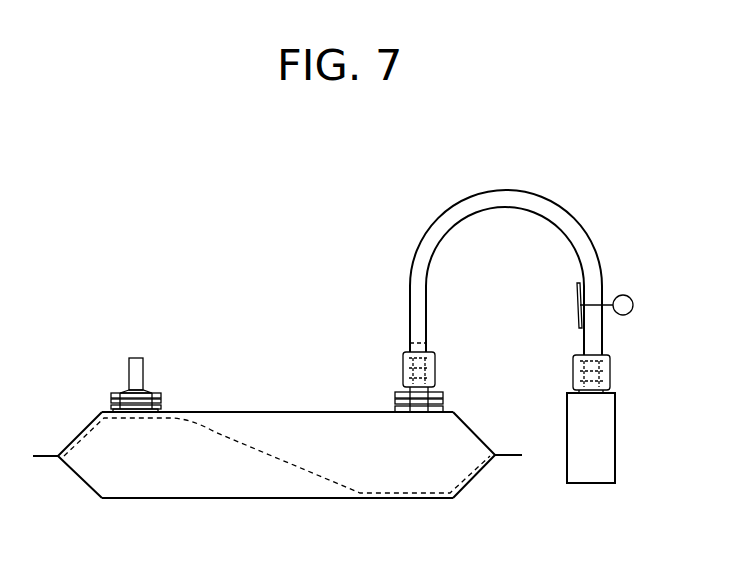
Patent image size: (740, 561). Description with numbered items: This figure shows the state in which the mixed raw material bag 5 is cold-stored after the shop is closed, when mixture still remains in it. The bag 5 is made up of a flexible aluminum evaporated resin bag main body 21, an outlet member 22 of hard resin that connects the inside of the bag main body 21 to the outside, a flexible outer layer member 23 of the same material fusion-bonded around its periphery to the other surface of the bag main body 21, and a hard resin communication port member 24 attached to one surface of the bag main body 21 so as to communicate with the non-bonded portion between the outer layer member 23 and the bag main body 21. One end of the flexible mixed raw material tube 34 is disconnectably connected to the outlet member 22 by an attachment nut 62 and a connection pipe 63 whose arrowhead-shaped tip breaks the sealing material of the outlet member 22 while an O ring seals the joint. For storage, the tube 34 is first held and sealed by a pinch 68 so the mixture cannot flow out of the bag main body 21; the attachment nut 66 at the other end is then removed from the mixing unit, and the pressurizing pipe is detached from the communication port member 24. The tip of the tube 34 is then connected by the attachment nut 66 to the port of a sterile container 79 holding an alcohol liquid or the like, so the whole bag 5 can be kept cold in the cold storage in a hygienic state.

The mixed raw material bag 5 is at (64, 486).
The bag main body 21 is at (201, 412).
The outlet member 22 is at (447, 396).
The outer layer member 23 is at (249, 499).
The communication port member 24 is at (128, 368).
The mixed raw material tube 34 is at (411, 263).
The attachment nut 62 is at (395, 354).
The connection pipe 63 is at (403, 339).
The attachment nut 66 is at (612, 372).
The pinch 68 is at (635, 304).
The sterile container 79 is at (590, 484).